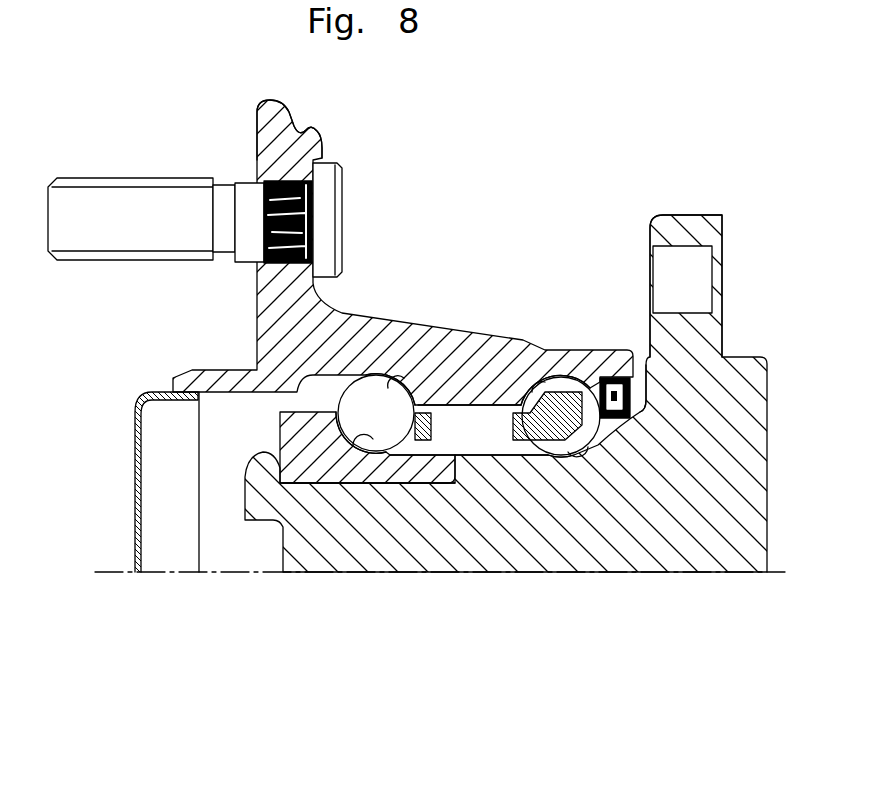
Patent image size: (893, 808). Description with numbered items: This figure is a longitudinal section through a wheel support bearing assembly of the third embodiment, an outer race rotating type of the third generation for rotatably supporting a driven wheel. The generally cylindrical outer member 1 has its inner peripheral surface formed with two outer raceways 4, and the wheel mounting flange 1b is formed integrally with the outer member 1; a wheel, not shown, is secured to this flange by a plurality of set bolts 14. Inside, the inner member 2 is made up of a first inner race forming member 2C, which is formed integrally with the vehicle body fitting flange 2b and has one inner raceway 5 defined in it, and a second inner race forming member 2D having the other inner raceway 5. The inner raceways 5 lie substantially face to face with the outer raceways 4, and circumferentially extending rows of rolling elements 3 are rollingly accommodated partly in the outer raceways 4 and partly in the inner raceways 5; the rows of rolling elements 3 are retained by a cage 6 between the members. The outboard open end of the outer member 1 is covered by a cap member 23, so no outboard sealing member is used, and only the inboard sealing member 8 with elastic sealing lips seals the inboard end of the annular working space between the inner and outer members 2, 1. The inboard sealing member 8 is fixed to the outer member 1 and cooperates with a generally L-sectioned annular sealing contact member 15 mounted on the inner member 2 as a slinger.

The outer member 1 is at (405, 322).
The wheel mounting flange 1b is at (290, 142).
The set bolts 14 is at (140, 205).
The inner member 2 is at (437, 643).
The first inner race forming member 2C is at (561, 543).
The second inner race forming member 2D is at (385, 484).
The vehicle body fitting flange 2b is at (690, 220).
The rolling elements 3 is at (372, 388).
The outer raceways 4 is at (410, 382).
The inner raceways 5 is at (358, 448).
The cage 6 is at (432, 428).
The inboard sealing member 8 is at (619, 388).
The annular sealing contact member 15 is at (642, 385).
The cap member 23 is at (133, 465).